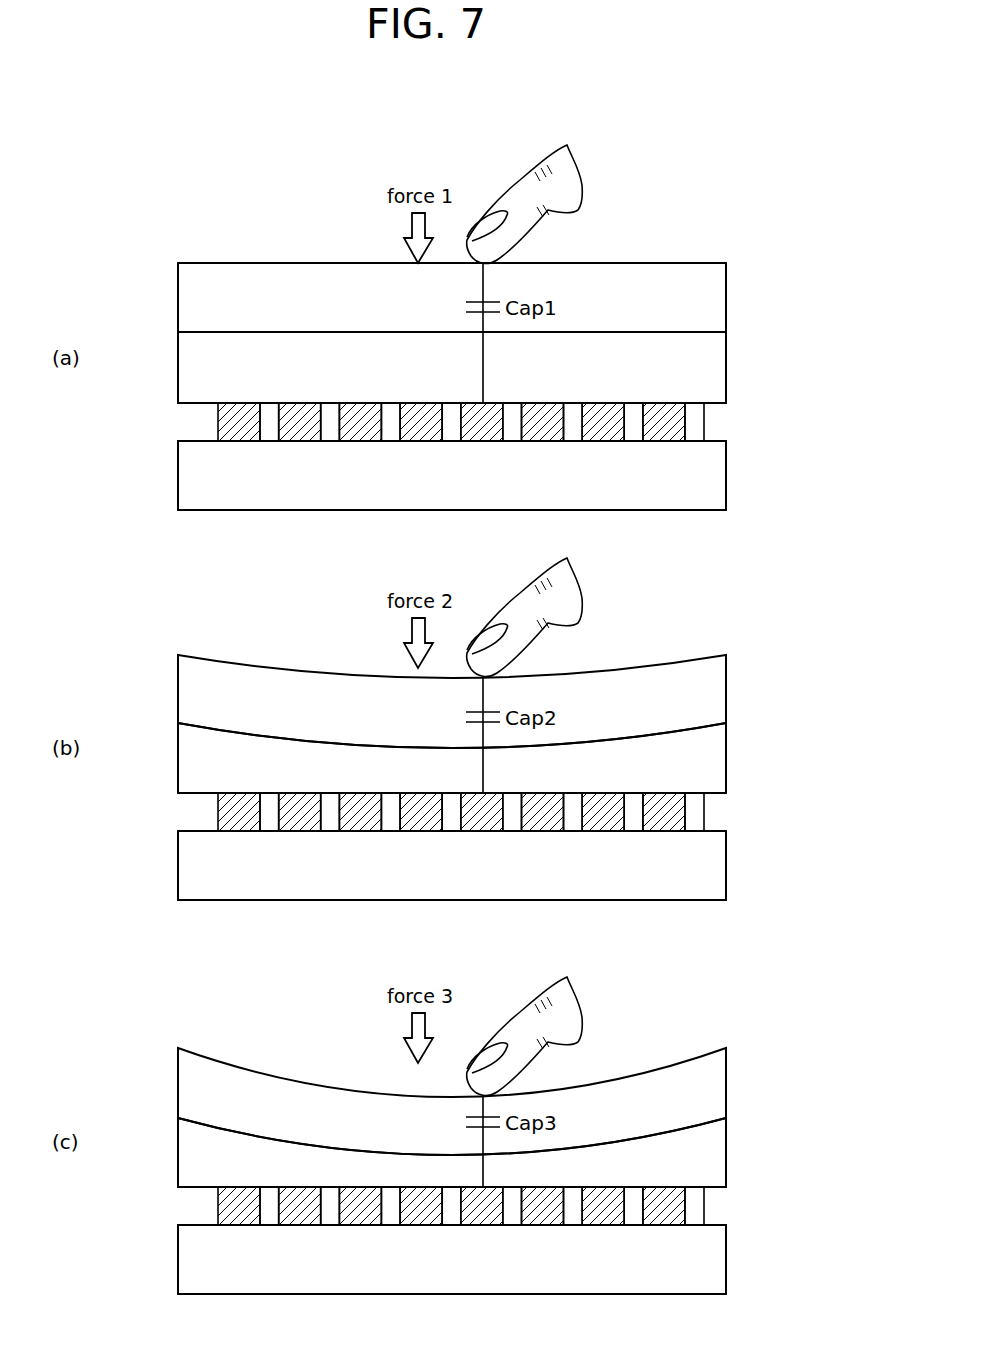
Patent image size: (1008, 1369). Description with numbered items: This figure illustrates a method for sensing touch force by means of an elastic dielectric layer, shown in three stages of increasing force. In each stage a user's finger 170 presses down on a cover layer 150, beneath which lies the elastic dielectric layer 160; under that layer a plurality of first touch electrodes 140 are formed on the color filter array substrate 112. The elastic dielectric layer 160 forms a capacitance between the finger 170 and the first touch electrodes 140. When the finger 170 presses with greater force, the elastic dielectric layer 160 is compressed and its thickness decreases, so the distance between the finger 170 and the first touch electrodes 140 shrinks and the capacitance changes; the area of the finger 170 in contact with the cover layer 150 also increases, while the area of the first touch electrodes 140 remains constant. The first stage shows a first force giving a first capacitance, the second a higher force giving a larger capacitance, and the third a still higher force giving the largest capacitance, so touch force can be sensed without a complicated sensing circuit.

The color filter array substrate 112 is at (178, 476).
The first touch electrodes 140 is at (233, 423).
The cover layer 150 is at (178, 300).
The elastic dielectric layer 160 is at (178, 368).
The finger 170 is at (526, 203).